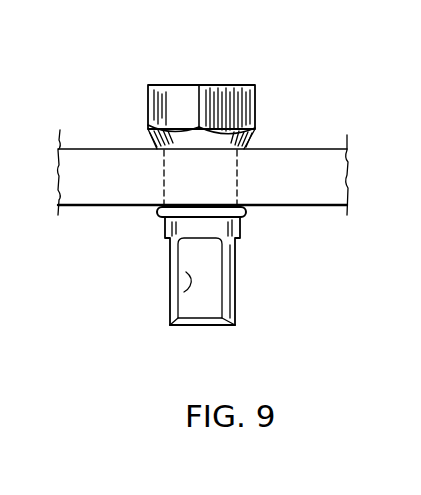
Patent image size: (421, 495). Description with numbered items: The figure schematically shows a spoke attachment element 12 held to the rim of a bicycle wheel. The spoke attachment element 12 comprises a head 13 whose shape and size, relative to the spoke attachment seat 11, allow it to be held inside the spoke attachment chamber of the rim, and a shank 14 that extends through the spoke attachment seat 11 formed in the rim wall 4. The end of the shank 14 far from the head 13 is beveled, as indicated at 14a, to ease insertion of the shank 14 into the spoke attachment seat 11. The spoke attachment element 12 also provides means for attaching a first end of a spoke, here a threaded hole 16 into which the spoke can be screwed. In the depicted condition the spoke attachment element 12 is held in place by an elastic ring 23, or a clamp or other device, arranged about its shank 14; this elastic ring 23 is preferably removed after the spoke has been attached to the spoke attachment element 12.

The panel 4 is at (98, 186).
The spoke attachment seat 11 is at (248, 163).
The spoke attachment element 12 is at (130, 111).
The head 13 is at (178, 103).
The shank 14 is at (236, 272).
The beveled end 14a is at (171, 330).
The threaded hole 16 is at (178, 296).
The elastic ring 23 is at (246, 212).